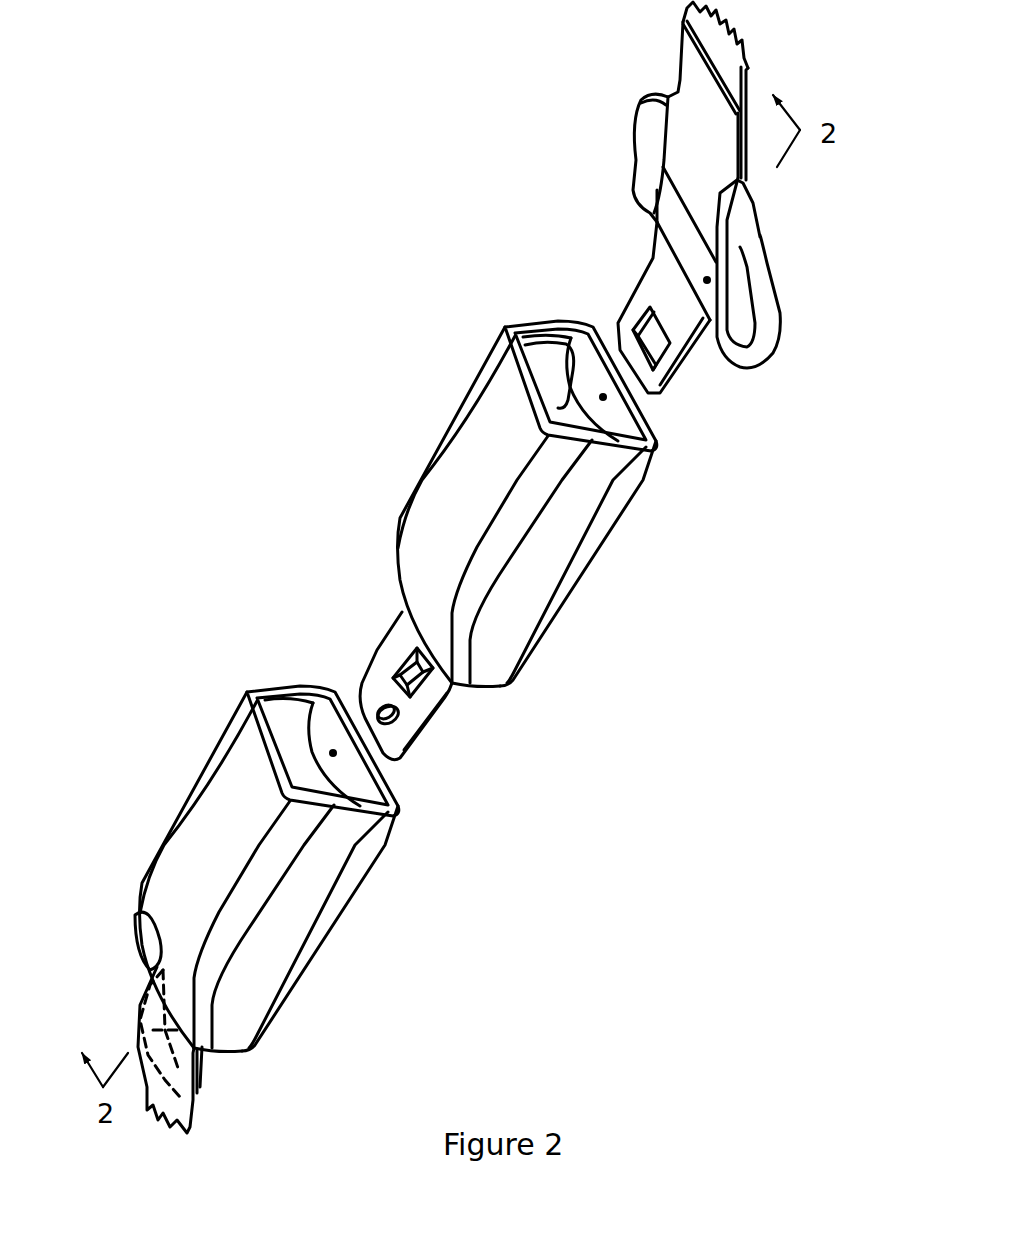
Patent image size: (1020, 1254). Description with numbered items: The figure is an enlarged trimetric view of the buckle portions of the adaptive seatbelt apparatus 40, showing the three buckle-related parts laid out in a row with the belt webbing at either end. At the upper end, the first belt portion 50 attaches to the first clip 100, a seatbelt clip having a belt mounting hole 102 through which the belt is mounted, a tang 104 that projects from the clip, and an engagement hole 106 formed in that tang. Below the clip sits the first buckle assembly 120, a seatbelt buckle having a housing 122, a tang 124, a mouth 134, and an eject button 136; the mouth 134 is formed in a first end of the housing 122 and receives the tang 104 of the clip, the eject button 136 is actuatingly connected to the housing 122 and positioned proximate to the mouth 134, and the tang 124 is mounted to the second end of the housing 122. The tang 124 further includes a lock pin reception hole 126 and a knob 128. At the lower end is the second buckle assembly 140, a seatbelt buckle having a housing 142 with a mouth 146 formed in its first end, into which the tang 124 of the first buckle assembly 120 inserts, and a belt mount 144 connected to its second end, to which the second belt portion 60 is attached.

The adaptive seatbelt apparatus 40 is at (518, 887).
The first belt portion 50 is at (678, 50).
The second belt portion 60 is at (197, 1100).
The first clip 100 is at (699, 298).
The belt mounting hole 102 is at (707, 280).
The tang 104 is at (613, 291).
The engagement hole 106 is at (650, 262).
The first buckle assembly 120 is at (549, 547).
The housing 122 is at (420, 453).
The tang 124 is at (434, 709).
The lock pin reception hole 126 is at (400, 723).
The knob 128 is at (400, 662).
The mouth 134 is at (603, 397).
The eject button 136 is at (543, 352).
The second buckle assembly 140 is at (237, 857).
The housing 142 is at (187, 788).
The belt mount 144 is at (155, 962).
The mouth 146 is at (333, 753).